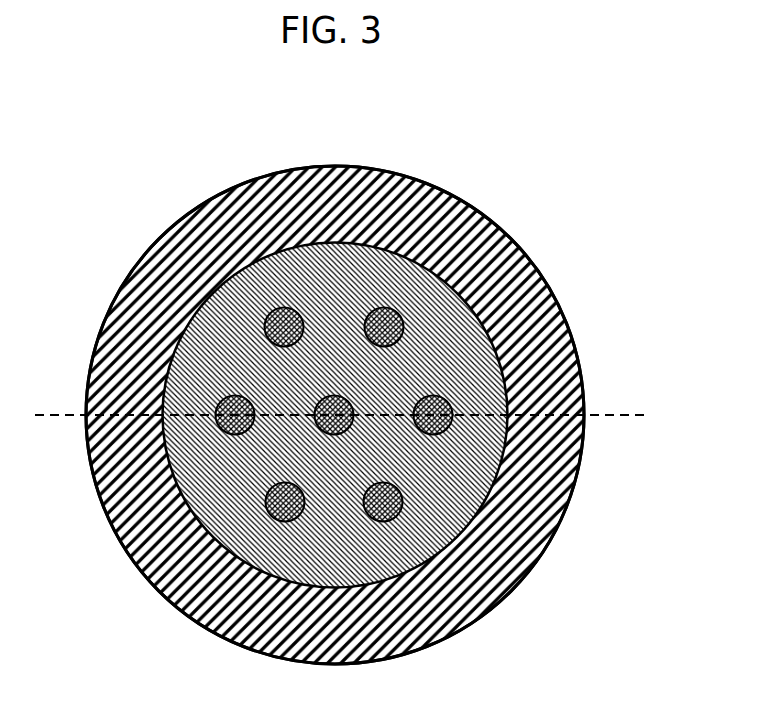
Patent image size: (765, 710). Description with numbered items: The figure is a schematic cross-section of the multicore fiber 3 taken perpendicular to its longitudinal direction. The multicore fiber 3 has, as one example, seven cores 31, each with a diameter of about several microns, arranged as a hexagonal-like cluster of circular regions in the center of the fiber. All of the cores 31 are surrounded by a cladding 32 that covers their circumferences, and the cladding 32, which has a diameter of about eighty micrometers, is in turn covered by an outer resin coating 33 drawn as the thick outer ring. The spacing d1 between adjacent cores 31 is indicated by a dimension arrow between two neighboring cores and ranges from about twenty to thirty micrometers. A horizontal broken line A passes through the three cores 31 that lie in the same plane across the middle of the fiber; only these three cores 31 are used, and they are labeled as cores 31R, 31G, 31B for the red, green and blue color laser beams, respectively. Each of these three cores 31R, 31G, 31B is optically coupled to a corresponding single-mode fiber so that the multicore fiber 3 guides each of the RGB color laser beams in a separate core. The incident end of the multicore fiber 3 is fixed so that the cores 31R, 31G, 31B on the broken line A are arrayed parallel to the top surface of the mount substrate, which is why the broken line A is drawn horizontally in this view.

The multicore fiber 3 is at (472, 144).
The cores 31 is at (383, 505).
The core for red 31R is at (250, 401).
The core for green 31G is at (348, 401).
The core for blue 31B is at (447, 401).
The cladding 32 is at (330, 567).
The resin coating 33 is at (178, 607).
The spacing of adjacent cores d1 is at (324, 432).
The broken line A is at (632, 412).